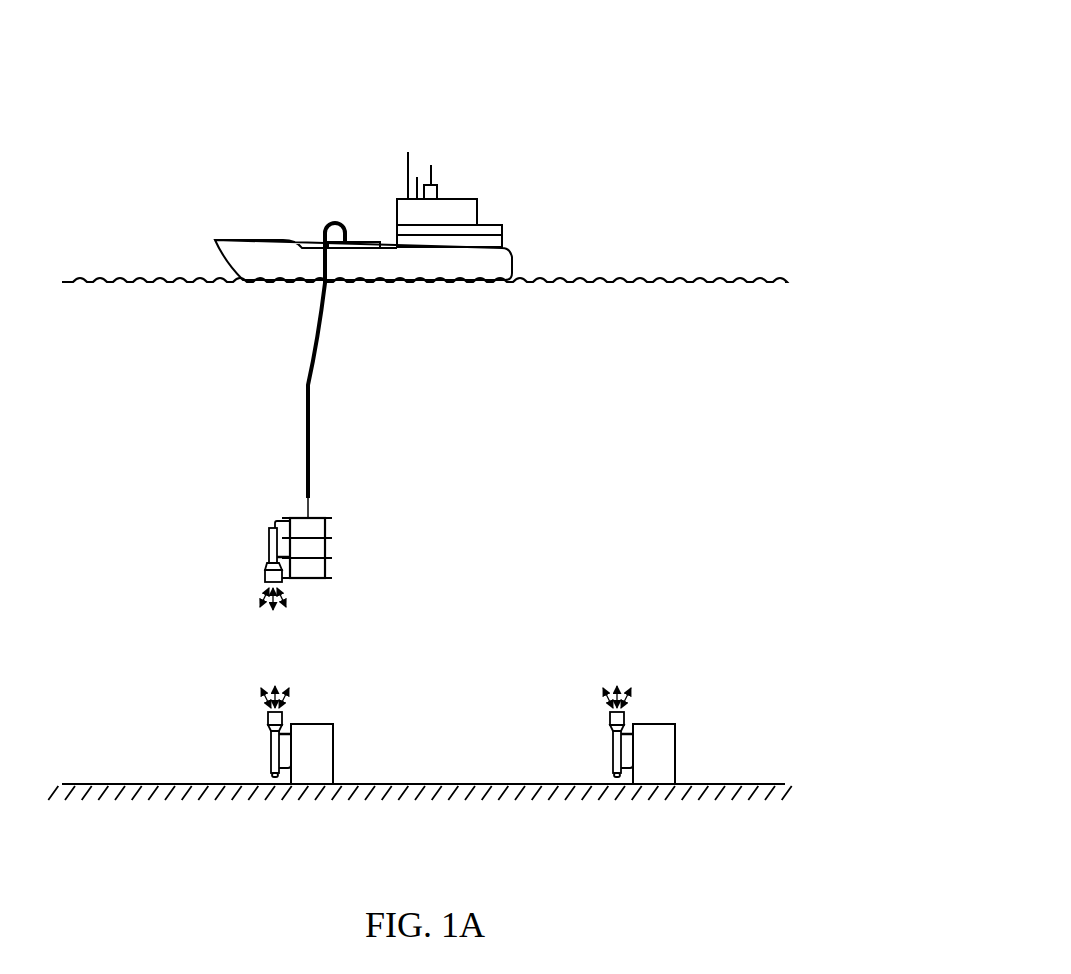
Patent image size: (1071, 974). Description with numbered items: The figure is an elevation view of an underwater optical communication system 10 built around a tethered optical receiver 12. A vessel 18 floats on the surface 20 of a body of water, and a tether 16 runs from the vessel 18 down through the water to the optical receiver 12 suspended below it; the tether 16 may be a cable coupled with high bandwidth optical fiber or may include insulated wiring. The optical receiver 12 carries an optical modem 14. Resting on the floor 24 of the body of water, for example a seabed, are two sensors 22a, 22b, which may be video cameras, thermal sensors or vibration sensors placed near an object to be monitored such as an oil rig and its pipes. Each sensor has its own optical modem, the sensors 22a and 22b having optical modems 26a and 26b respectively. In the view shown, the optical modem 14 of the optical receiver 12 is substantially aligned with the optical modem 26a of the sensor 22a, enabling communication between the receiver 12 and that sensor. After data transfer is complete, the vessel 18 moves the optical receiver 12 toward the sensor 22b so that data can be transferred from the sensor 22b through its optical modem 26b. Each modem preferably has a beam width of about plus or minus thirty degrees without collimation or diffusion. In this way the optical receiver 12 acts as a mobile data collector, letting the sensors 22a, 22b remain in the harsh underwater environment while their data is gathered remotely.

The underwater optical communication system 10 is at (704, 45).
The optical receiver 12 is at (323, 510).
The optical modem 14 is at (265, 570).
The tether 16 is at (313, 358).
The vessel 18 is at (467, 199).
The surface 20 is at (623, 280).
The sensor 22a is at (333, 743).
The sensor 22b is at (675, 742).
The floor 24 is at (428, 787).
The optical modem 26a is at (268, 722).
The optical modem 26b is at (609, 721).